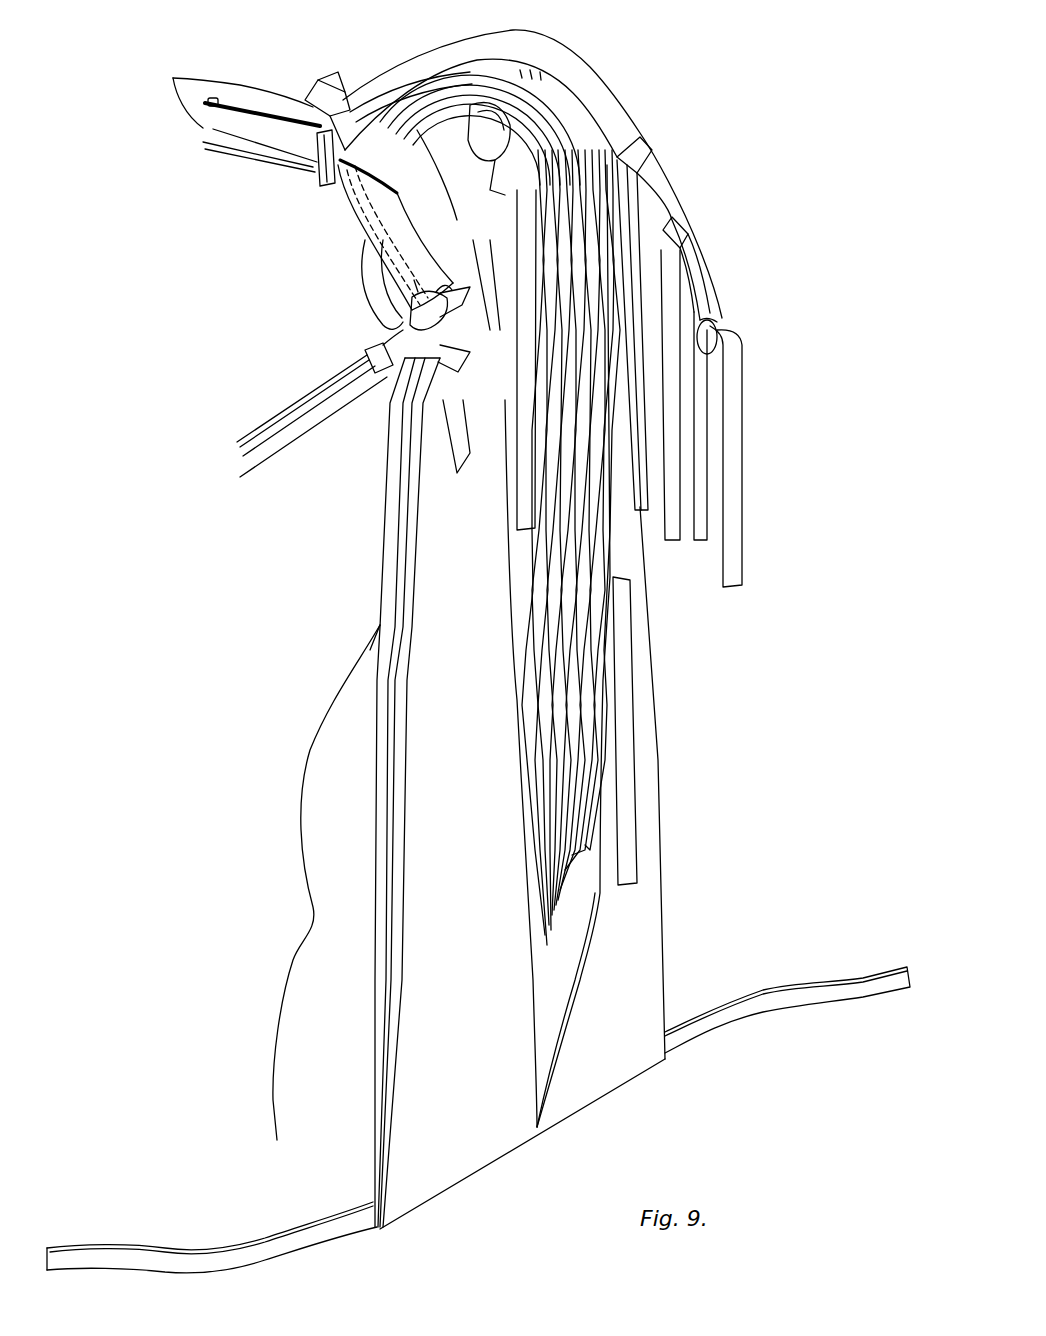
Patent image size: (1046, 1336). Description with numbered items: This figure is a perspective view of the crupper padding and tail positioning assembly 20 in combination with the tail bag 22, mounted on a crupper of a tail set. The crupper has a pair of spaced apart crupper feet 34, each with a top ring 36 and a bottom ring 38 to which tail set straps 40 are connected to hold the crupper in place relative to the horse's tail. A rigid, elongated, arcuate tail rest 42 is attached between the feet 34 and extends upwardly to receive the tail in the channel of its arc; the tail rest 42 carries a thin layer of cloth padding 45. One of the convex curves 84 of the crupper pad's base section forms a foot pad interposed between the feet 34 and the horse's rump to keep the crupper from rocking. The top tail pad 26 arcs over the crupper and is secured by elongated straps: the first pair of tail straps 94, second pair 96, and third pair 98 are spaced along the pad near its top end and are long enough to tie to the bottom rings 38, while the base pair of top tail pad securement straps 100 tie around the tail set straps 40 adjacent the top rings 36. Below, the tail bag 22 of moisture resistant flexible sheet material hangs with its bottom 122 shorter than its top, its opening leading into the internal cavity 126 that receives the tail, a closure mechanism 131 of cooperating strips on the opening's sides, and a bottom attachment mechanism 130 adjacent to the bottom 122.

The crupper padding and tail positioning assembly 20 is at (642, 70).
The tail bag 22 is at (643, 972).
The top tail pad 26 is at (521, 52).
The crupper feet 34 is at (371, 212).
The top ring 36 is at (314, 167).
The bottom ring 38 is at (421, 308).
The tail set straps 40 is at (178, 80).
The tail rest 42 is at (500, 193).
The cloth padding 45 is at (488, 180).
The convex curve 84 is at (374, 285).
The first pair of tail straps 94 is at (719, 327).
The second pair of tail straps 96 is at (684, 229).
The third pair of tail straps 98 is at (645, 150).
The base pair top tail pad securement straps 100 is at (353, 95).
The bottom 122 is at (444, 1170).
The internal cavity 126 is at (549, 972).
The bottom attachment mechanism 130 is at (835, 998).
The closure mechanism 131 is at (627, 623).